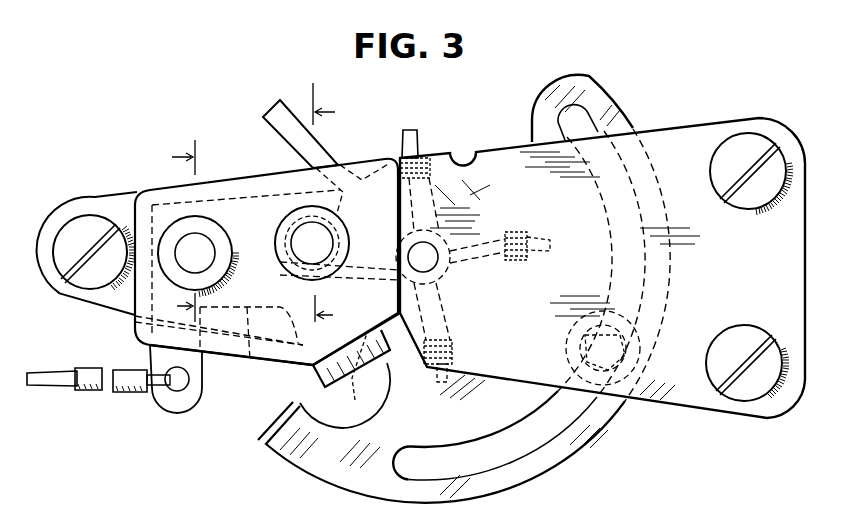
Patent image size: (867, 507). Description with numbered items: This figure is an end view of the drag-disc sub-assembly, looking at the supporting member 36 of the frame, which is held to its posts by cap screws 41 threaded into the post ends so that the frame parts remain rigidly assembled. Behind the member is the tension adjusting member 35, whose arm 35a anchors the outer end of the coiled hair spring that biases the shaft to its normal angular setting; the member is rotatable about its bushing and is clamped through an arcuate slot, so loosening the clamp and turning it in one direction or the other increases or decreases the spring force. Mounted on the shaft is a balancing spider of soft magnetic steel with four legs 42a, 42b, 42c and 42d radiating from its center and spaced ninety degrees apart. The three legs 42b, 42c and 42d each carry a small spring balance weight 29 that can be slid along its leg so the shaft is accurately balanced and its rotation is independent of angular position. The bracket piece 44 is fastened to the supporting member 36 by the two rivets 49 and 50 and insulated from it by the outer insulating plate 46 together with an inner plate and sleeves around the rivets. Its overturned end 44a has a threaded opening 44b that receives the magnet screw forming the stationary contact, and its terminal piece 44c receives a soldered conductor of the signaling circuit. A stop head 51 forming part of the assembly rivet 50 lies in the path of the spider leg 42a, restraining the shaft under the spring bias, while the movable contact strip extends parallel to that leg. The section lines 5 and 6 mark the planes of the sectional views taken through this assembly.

The spring balance weight 29 is at (437, 210).
The tension adjusting member 35 is at (540, 468).
The arm of tension adjusting member 35a is at (268, 112).
The supporting member 36 is at (662, 397).
The cap screws 41 is at (731, 150).
The spider leg 42a is at (300, 273).
The spider leg 42b is at (413, 143).
The spider leg 42c is at (540, 252).
The spider leg 42d is at (447, 385).
The bracket piece 44 is at (246, 353).
The overturned end of bracket piece 44a is at (327, 373).
The threaded opening 44b is at (345, 380).
The terminal piece 44c is at (200, 387).
The outer insulating plate 46 is at (214, 186).
The rivet 49 is at (192, 243).
The assembly rivet 50 is at (281, 233).
The stop head 51 is at (313, 227).
The section line 5 is at (173, 231).
The section line 6 is at (332, 205).